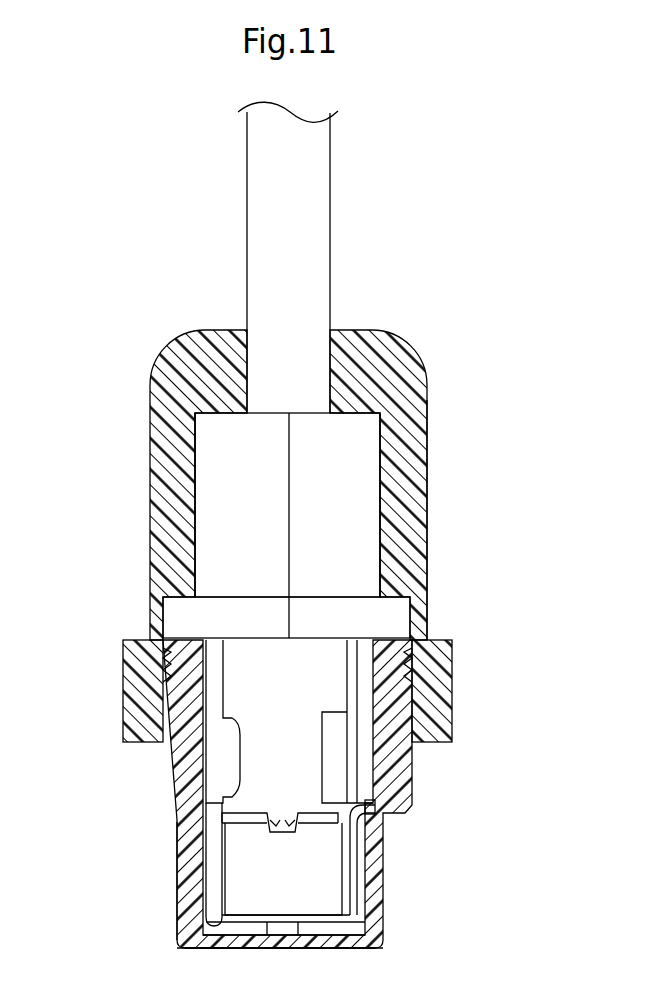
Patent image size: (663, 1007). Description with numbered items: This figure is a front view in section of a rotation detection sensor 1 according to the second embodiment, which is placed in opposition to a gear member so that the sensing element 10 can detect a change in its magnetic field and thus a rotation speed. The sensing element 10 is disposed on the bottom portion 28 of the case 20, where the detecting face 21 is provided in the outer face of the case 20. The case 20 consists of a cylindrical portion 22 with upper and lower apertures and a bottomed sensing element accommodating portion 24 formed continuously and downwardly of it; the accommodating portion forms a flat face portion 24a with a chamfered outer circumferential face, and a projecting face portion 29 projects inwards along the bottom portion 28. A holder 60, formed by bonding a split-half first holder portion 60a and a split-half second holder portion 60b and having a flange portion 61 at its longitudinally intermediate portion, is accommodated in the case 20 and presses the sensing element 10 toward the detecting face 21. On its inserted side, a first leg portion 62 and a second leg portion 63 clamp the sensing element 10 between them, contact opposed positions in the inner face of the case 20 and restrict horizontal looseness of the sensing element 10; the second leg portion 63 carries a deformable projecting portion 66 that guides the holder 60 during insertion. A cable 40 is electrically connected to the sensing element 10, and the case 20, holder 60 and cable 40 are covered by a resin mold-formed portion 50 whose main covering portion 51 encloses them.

The rotation detection sensor 1 is at (125, 293).
The sensing element 10 is at (258, 903).
The case 20 is at (163, 782).
The detecting face 21 is at (298, 948).
The cylindrical portion 22 is at (165, 707).
The sensing element accommodating portion 24 is at (377, 910).
The flat face portion 24a is at (177, 855).
The bottom portion 28 is at (230, 945).
The projecting face portion 29 is at (342, 848).
The cable 40 is at (323, 200).
The mold-formed portion 50 is at (425, 366).
The main covering portion 51 is at (420, 447).
The holder 60 is at (345, 408).
The first holder portion 60a is at (193, 503).
The second holder portion 60b is at (383, 534).
The flange portion 61 is at (170, 618).
The first leg portion 62 is at (213, 905).
The second leg portion 63 is at (355, 880).
The projecting portion 66 is at (367, 803).